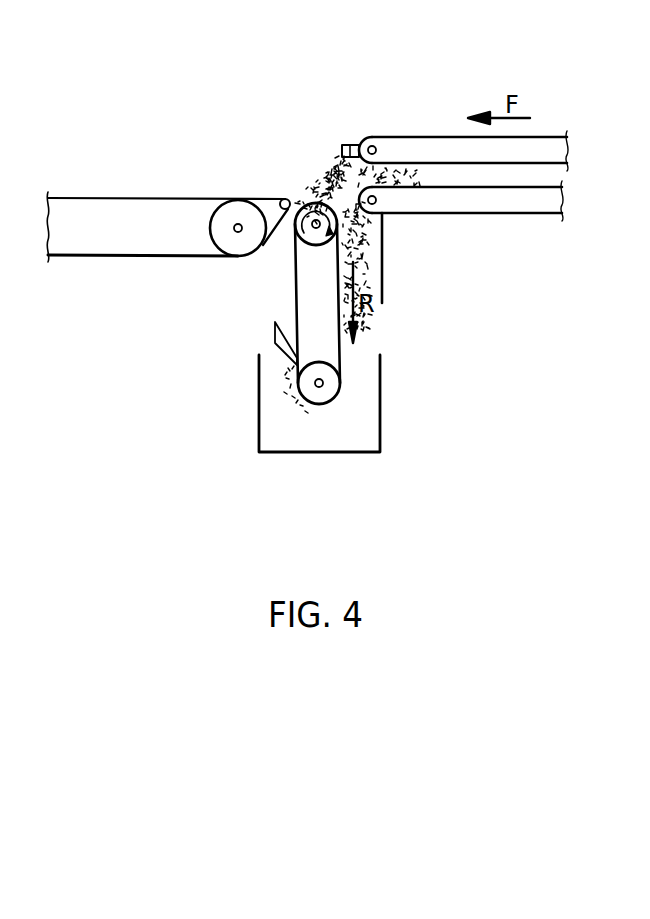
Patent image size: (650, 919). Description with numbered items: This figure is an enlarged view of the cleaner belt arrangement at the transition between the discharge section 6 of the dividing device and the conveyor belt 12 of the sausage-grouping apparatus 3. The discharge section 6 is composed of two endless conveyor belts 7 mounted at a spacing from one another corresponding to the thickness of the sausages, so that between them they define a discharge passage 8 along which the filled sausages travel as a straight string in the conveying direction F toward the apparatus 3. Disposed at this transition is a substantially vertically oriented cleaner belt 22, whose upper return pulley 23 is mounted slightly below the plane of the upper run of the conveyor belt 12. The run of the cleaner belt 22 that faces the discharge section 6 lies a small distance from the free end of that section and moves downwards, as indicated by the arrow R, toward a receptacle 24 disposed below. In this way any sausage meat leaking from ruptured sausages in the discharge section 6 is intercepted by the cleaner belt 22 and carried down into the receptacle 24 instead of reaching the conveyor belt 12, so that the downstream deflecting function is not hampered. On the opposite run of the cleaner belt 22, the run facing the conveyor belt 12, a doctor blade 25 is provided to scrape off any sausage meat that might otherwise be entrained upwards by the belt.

The apparatus 3 is at (168, 170).
The conveyor belt 12 is at (238, 228).
The discharge section 6 is at (380, 134).
The endless conveyor belts 7 is at (535, 150).
The discharge passage 8 is at (428, 172).
The cleaner belt 22 is at (341, 357).
The upper return pulley 23 is at (303, 243).
The receptacle 24 is at (259, 424).
The doctor blade 25 is at (275, 330).